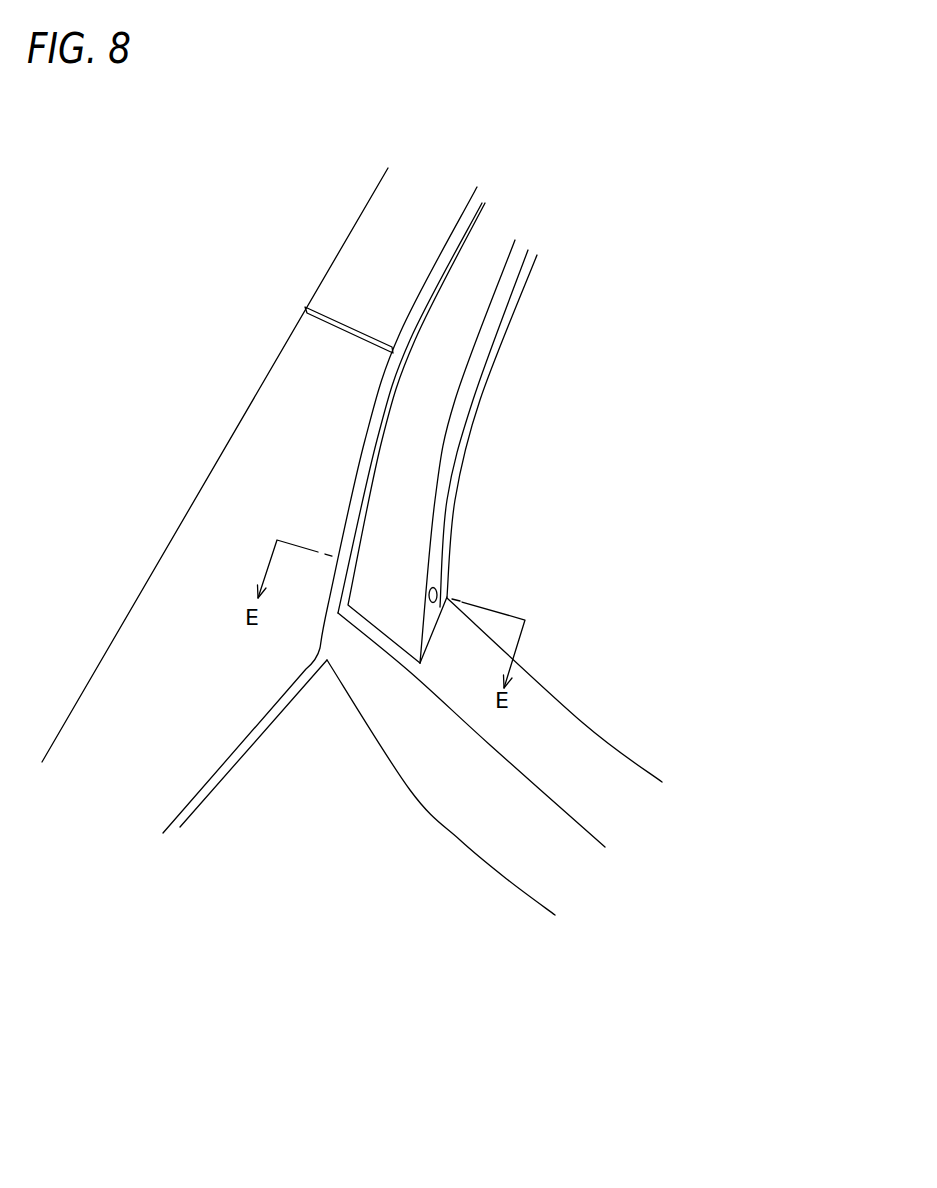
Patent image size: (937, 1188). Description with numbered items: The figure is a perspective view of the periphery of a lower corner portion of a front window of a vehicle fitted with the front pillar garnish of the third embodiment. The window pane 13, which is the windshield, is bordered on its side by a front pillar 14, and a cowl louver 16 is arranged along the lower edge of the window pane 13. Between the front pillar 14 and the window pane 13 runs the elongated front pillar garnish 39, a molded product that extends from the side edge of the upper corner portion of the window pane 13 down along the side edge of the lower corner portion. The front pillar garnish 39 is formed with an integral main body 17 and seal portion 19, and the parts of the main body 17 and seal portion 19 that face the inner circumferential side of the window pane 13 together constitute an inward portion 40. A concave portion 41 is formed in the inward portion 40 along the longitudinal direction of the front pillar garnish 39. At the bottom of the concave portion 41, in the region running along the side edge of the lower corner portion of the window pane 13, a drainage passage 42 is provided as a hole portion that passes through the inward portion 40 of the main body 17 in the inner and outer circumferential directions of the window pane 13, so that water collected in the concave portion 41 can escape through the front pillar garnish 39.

The window pane 13 is at (675, 600).
The front pillar 14 is at (362, 212).
The cowl louver 16 is at (530, 731).
The main body 17 is at (408, 433).
The seal portion 19 is at (483, 415).
The front pillar garnish 39 is at (443, 318).
The inward portion 40 is at (482, 337).
The concave portion 41 is at (447, 480).
The drainage passage 42 is at (440, 592).